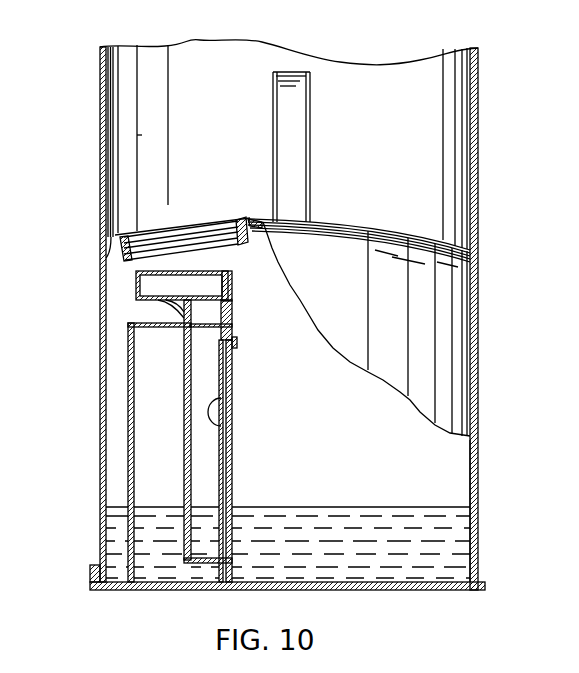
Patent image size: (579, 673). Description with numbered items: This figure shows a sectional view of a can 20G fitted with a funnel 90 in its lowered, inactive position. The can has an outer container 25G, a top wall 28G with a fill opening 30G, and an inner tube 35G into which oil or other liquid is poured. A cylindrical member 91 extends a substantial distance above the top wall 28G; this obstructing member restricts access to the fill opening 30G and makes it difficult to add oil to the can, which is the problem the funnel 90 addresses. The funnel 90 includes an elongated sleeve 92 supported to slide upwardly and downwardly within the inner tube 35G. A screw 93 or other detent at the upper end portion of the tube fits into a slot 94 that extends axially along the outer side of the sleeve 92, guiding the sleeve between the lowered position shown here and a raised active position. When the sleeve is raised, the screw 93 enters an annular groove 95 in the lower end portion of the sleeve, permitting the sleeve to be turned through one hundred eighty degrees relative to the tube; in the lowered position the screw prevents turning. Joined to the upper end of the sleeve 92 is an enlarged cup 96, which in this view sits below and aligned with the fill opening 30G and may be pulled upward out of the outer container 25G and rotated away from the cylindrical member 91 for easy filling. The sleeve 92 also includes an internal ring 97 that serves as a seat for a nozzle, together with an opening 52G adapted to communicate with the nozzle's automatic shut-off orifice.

The can 20G is at (497, 437).
The outer container 25G is at (482, 496).
The top wall 28G is at (343, 221).
The fill opening 30G is at (232, 232).
The inner tube 35G is at (240, 478).
The opening 52G is at (232, 318).
The funnel 90 is at (238, 289).
The cylindrical member 91 is at (103, 142).
The elongated sleeve 92 is at (183, 388).
The screw 93 is at (237, 343).
The slot 94 is at (222, 426).
The annular groove 95 is at (183, 546).
The enlarged cup 96 is at (137, 283).
The internal ring 97 is at (185, 352).